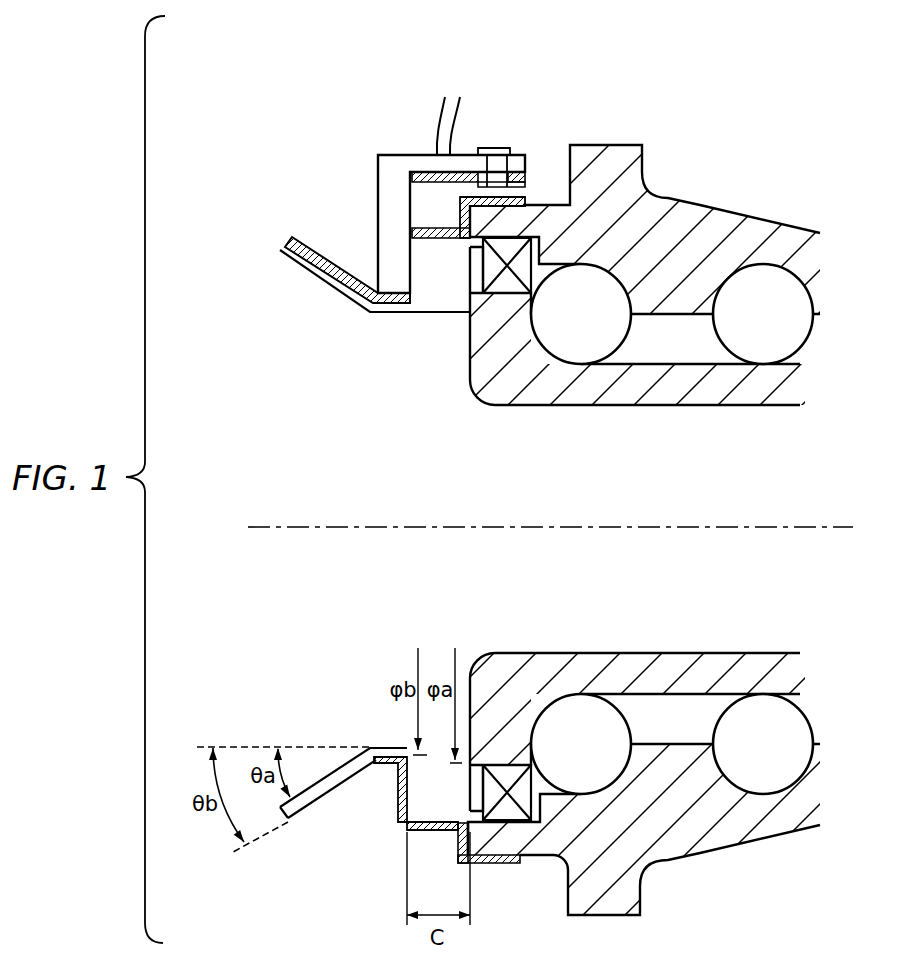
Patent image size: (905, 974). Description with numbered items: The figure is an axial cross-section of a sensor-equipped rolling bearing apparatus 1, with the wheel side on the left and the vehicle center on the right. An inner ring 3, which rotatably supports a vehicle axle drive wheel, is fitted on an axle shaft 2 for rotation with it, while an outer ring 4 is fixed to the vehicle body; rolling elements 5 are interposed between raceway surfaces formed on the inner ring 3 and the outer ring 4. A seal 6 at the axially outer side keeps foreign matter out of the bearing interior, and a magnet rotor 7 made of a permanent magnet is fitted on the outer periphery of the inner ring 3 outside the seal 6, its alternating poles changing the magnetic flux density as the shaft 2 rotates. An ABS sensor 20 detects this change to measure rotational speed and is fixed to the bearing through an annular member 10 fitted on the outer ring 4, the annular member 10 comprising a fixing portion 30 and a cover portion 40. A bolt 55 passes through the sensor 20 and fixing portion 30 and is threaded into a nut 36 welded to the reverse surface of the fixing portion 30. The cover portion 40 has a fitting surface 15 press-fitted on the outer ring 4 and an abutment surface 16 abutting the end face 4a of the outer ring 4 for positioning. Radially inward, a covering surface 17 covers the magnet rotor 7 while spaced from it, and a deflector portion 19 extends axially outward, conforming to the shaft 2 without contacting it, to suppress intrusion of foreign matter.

The sensor-equipped rolling bearing apparatus 1 is at (757, 79).
The axle shaft 2 is at (758, 466).
The inner ring 3 is at (777, 383).
The outer ring 4 is at (783, 243).
The end face of the outer ring 4a is at (455, 845).
The rolling elements 5 is at (763, 293).
The seal 6 is at (510, 285).
The magnet rotor 7 is at (477, 275).
The annular member 10 is at (517, 53).
The fitting surface 15 is at (500, 860).
The abutment surface 16 is at (462, 845).
The covering surface 17 is at (396, 797).
The deflector portion 19 is at (307, 808).
The ABS sensor 20 is at (383, 176).
The fixing portion 30 is at (528, 164).
The nut 36 is at (478, 183).
The cover portion 40 is at (527, 178).
The bolt 55 is at (495, 148).